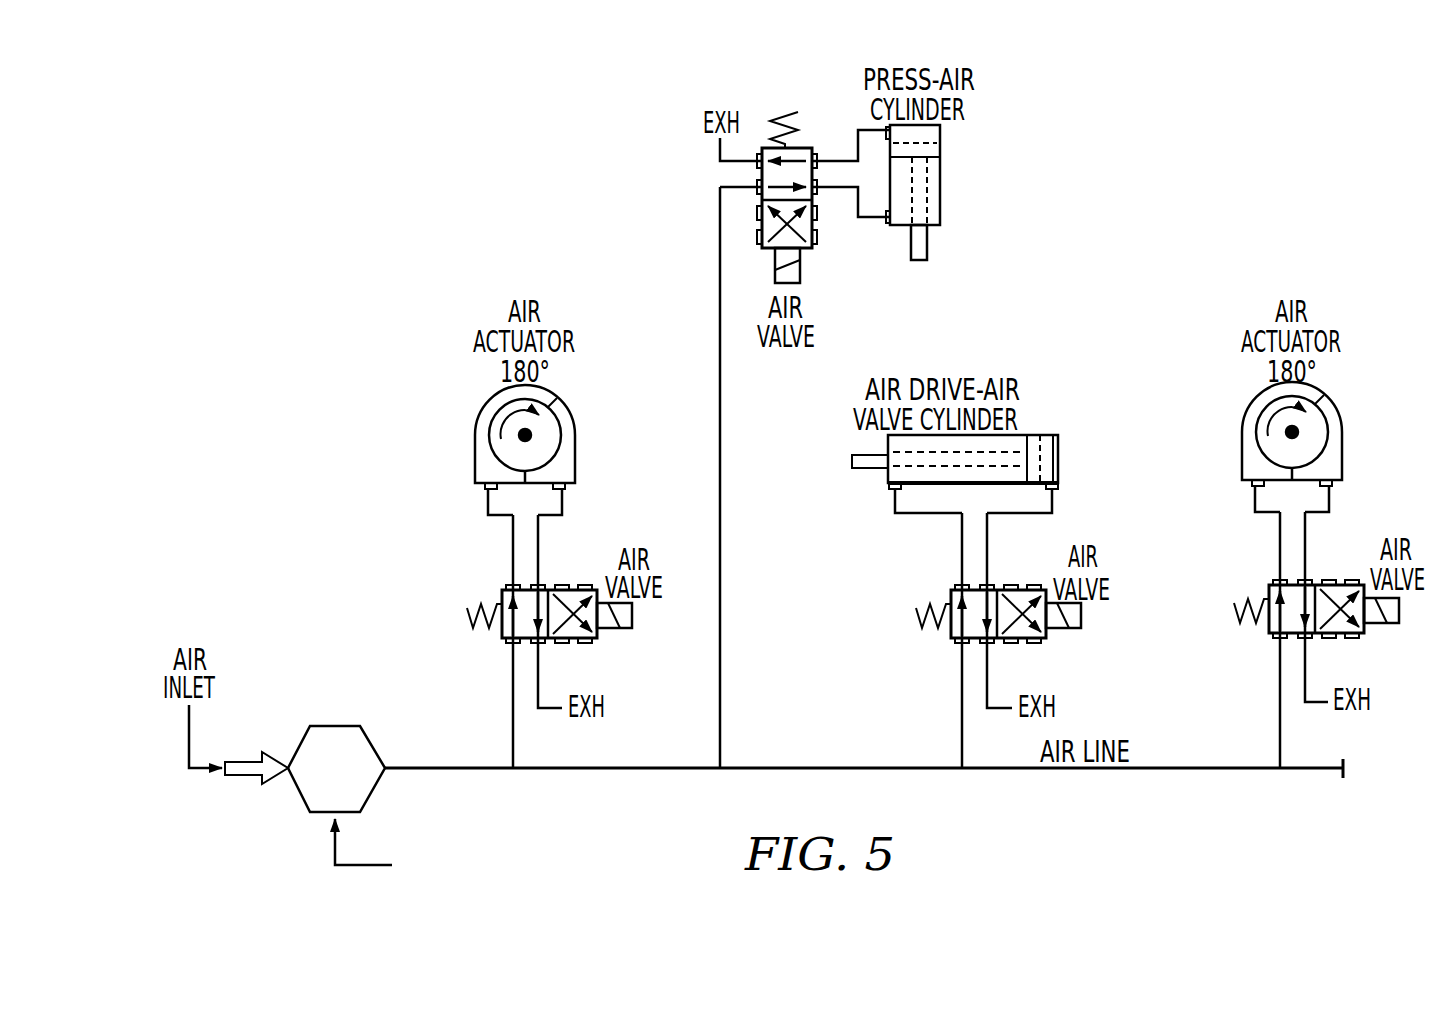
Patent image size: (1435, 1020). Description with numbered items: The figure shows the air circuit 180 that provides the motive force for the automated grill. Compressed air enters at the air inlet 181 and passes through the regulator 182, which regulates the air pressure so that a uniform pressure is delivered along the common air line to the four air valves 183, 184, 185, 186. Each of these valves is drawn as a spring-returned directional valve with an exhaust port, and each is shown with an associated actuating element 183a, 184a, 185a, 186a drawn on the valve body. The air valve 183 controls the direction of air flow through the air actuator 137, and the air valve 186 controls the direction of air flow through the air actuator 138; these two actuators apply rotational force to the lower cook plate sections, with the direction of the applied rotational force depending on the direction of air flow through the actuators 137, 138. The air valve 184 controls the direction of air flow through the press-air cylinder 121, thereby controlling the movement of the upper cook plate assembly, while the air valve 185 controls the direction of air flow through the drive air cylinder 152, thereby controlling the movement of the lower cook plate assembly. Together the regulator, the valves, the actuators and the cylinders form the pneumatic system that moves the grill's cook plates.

The press-air cylinder 121 is at (943, 186).
The air actuator 137 is at (475, 452).
The air actuator 138 is at (1340, 432).
The drive air cylinder 152 is at (1053, 434).
The air circuit 180 is at (1240, 211).
The air inlet 181 is at (241, 778).
The regulator 182 is at (332, 726).
The air valve 183 is at (499, 586).
The air valve solenoid 183a is at (612, 630).
The air valve 184 is at (812, 140).
The air valve solenoid 184a is at (801, 272).
The air valve 185 is at (947, 586).
The air valve solenoid 185a is at (1061, 630).
The air valve 186 is at (1346, 558).
The air valve solenoid 186a is at (1379, 625).